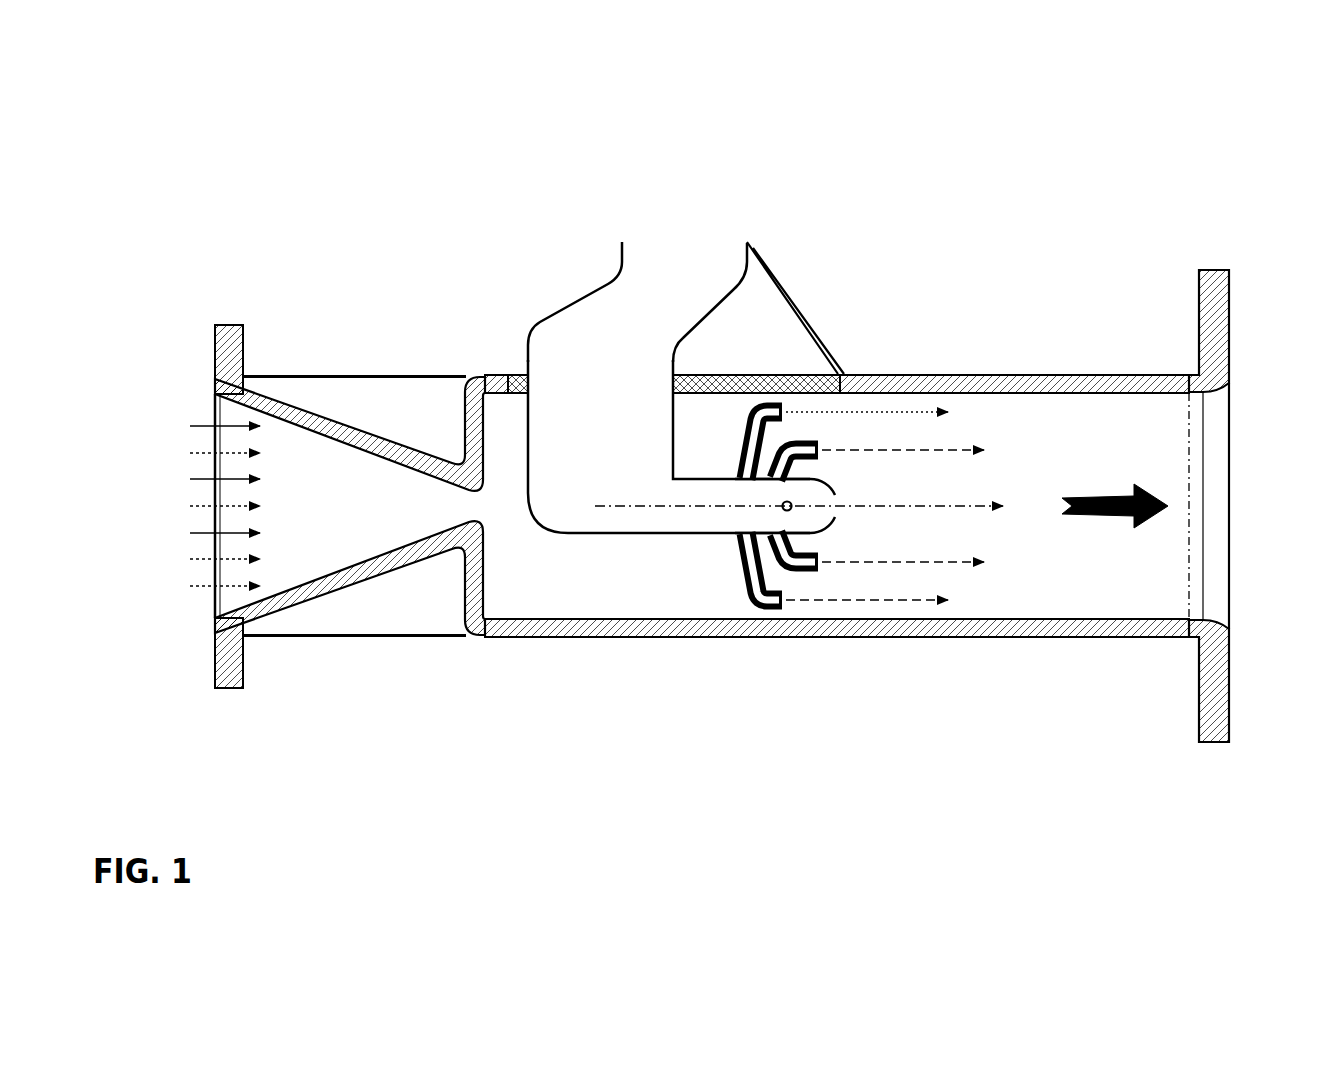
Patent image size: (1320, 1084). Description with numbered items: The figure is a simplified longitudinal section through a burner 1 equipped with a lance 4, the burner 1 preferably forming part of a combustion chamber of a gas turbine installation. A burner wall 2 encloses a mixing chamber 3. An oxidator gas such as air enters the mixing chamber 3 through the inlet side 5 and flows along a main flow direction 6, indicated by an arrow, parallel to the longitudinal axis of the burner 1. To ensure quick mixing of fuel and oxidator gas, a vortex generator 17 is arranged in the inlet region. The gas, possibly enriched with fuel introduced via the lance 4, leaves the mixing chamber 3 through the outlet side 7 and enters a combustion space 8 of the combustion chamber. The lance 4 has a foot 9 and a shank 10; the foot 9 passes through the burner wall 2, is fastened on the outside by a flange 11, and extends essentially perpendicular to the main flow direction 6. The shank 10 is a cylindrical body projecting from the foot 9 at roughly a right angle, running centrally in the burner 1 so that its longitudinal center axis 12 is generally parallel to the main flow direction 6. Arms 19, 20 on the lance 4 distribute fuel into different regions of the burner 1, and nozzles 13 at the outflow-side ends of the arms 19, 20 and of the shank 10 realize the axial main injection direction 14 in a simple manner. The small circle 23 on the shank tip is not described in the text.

The burner 1 is at (310, 174).
The burner wall 2 is at (952, 382).
The mixing chamber 3 is at (1038, 452).
The lance 4 is at (576, 340).
The inlet side 5 is at (230, 492).
The main flow direction 6 is at (1110, 497).
The outlet side 7 is at (1232, 470).
The combustion space 8 is at (1283, 547).
The foot 9 is at (632, 409).
The shank 10 is at (669, 522).
The flange 11 is at (794, 308).
The longitudinal center axis 12 is at (595, 509).
The nozzle 13 is at (787, 604).
The main injection direction 14 is at (1013, 514).
The vortex generator 17 is at (382, 606).
The arm 19 is at (785, 572).
The arm 20 is at (748, 585).
The ignition point 23 is at (789, 500).